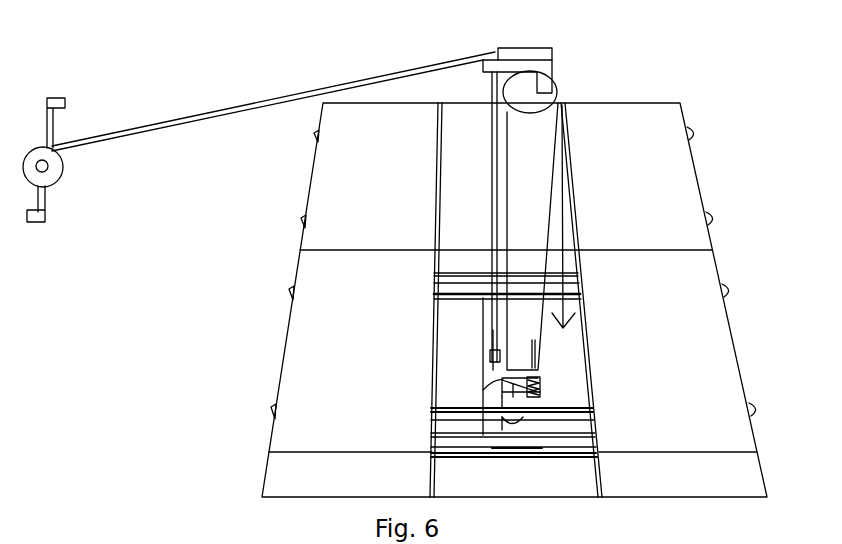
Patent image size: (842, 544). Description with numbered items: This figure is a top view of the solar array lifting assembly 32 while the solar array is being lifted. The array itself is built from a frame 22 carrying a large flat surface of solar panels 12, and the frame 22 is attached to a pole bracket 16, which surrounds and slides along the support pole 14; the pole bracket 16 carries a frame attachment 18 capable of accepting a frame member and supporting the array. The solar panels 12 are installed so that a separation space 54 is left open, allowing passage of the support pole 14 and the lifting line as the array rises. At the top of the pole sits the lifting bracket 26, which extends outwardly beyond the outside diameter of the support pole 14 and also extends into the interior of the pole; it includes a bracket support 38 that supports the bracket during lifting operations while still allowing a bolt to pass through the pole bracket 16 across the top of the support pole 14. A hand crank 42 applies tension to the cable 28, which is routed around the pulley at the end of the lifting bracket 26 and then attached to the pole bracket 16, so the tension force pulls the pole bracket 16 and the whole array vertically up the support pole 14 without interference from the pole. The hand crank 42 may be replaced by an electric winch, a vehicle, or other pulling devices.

The solar panels 12 is at (658, 115).
The support pole 14 is at (543, 130).
The pole bracket 16 is at (537, 368).
The frame attachment 18 is at (487, 375).
The frame 22 is at (728, 288).
The lifting bracket 26 is at (548, 63).
The cable 28 is at (368, 83).
The solar array lifting assembly 32 is at (159, 325).
The bracket support 38 is at (537, 102).
The hand crank 42 is at (62, 165).
The separation space 54 is at (577, 252).